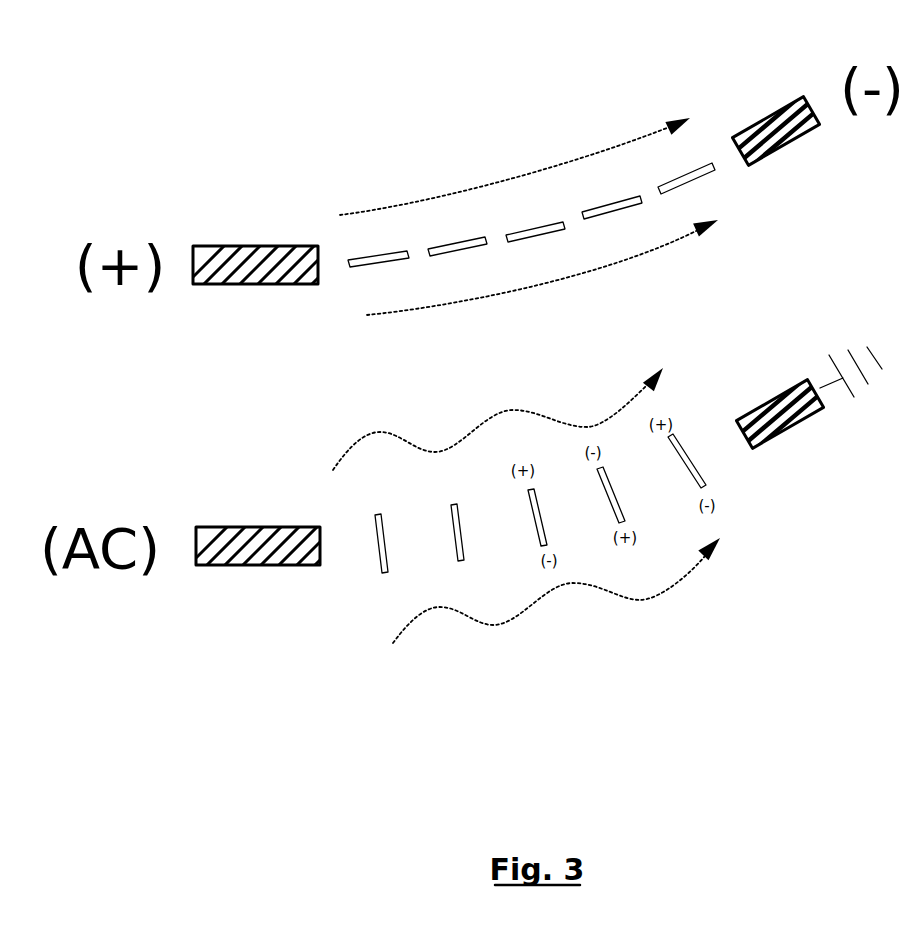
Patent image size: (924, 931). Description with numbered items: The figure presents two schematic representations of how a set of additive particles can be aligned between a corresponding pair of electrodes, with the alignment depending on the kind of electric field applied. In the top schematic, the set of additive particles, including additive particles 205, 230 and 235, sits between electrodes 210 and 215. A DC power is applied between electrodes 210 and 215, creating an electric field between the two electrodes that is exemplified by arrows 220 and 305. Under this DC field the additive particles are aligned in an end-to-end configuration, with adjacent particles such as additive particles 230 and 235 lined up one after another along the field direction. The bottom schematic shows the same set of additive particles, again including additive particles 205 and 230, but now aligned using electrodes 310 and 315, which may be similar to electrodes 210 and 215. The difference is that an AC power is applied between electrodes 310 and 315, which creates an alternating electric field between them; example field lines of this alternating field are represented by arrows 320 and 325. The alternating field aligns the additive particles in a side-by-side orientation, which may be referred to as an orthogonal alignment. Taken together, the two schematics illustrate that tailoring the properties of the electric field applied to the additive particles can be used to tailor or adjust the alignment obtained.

The additive particle 205 is at (379, 268).
The electrode 210 is at (213, 246).
The electrode 215 is at (763, 116).
The arrow 220 is at (365, 210).
The additive particle 230 is at (462, 245).
The additive particle 235 is at (540, 222).
The arrow 305 is at (714, 226).
The electrode 310 is at (223, 565).
The electrode 315 is at (807, 424).
The arrow 320 is at (658, 368).
The arrow 325 is at (718, 548).